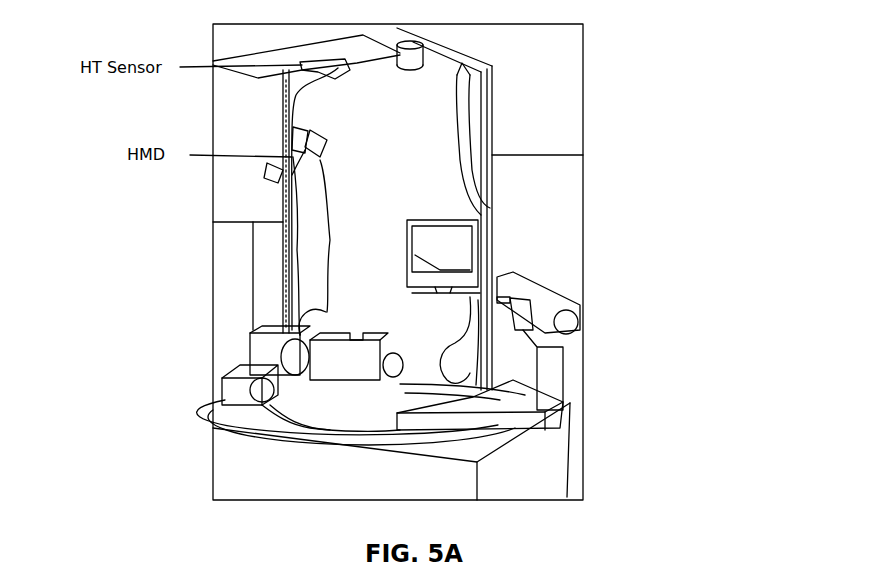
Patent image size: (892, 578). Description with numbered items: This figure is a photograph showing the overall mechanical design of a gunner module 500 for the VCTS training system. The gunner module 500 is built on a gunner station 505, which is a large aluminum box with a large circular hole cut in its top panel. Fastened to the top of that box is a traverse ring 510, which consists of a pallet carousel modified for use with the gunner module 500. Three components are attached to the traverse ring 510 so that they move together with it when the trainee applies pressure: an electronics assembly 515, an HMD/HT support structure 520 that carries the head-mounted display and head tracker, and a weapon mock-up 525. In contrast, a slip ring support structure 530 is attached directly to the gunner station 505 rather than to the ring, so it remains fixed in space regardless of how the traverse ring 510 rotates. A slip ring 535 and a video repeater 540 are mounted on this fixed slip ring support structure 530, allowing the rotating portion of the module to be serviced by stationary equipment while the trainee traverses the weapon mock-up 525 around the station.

The gunner module 500 is at (606, 425).
The gunner station 505 is at (267, 457).
The traverse ring 510 is at (240, 422).
The electronics assembly 515 is at (292, 333).
The HMD/HT support structure 520 is at (283, 203).
The weapon mock-up 525 is at (582, 311).
The slip ring support structure 530 is at (495, 155).
The slip ring 535 is at (425, 52).
The video repeater 540 is at (452, 242).